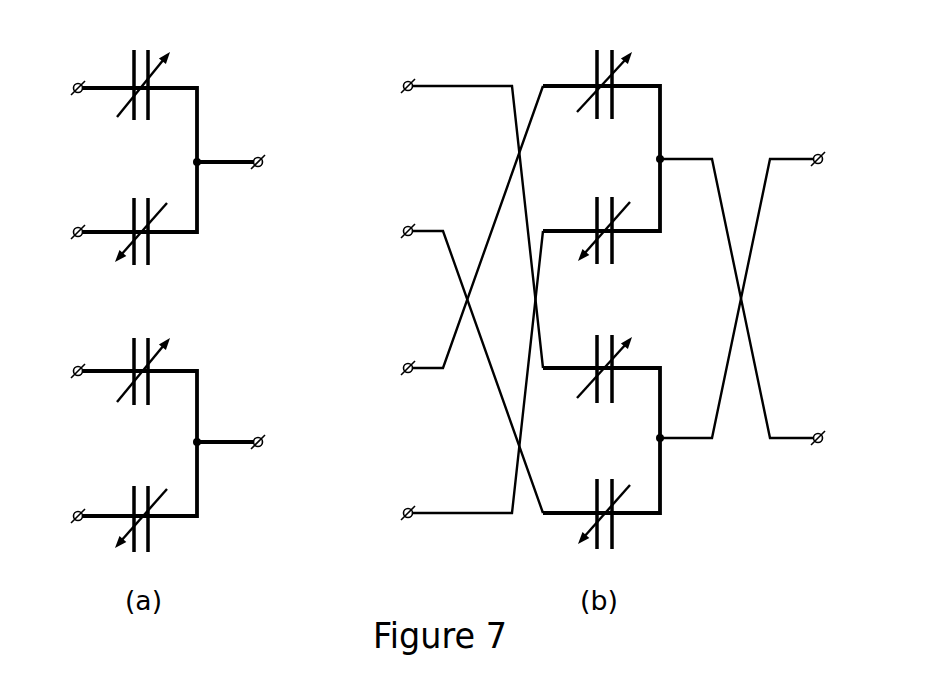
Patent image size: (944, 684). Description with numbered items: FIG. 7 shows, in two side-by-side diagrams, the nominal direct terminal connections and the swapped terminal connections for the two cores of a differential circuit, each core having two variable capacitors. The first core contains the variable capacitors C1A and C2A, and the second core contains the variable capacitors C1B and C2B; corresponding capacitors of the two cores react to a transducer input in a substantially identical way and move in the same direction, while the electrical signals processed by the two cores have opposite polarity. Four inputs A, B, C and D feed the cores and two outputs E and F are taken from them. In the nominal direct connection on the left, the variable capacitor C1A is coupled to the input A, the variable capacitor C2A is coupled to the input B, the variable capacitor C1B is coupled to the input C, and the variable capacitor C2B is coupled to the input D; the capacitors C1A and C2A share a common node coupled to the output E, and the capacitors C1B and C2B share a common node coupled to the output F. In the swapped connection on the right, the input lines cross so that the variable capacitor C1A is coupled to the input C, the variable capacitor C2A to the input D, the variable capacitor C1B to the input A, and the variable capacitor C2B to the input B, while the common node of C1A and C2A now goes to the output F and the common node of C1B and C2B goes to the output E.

The variable capacitor C1A is at (374, 63).
The variable capacitor C2A is at (372, 210).
The variable capacitor C1B is at (374, 349).
The variable capacitor C2B is at (372, 496).
The input A is at (223, 87).
The input B is at (223, 233).
The input C is at (223, 376).
The input D is at (223, 521).
The output E is at (554, 162).
The output F is at (553, 439).